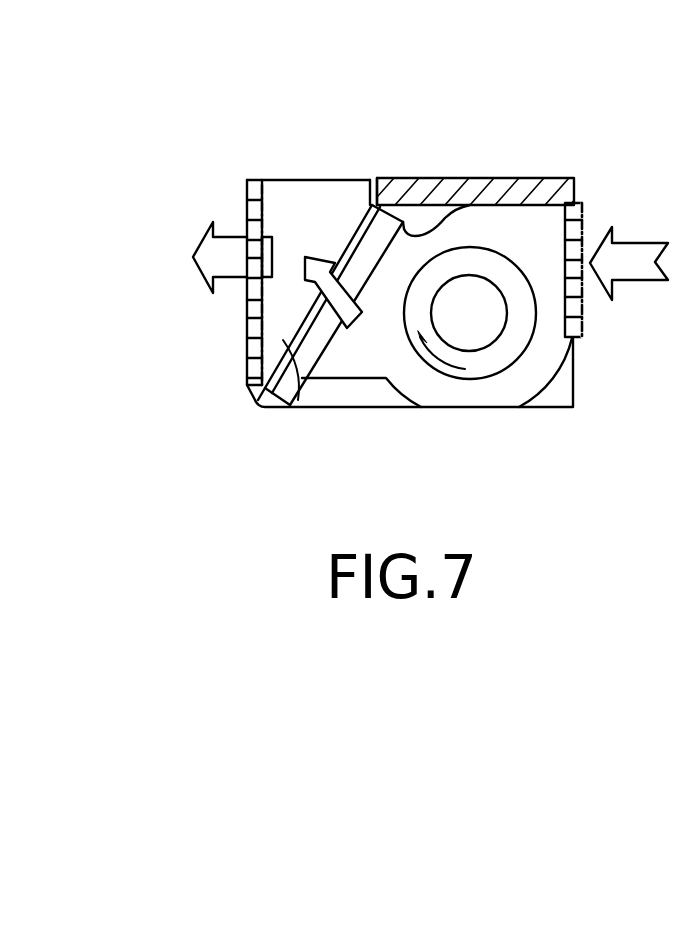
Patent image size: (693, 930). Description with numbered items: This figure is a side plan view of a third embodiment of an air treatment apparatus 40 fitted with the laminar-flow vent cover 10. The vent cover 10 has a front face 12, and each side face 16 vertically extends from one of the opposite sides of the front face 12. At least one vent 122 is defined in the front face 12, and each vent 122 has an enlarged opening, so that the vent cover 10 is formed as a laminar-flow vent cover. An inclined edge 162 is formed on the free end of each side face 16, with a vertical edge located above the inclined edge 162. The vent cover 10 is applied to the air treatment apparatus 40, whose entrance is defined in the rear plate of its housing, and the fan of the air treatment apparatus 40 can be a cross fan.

The vent cover 10 is at (222, 171).
The front face 12 is at (253, 189).
The vent 122 is at (253, 323).
The side face 16 is at (307, 200).
The inclined edge 162 is at (298, 398).
The air treatment apparatus 40 is at (490, 164).